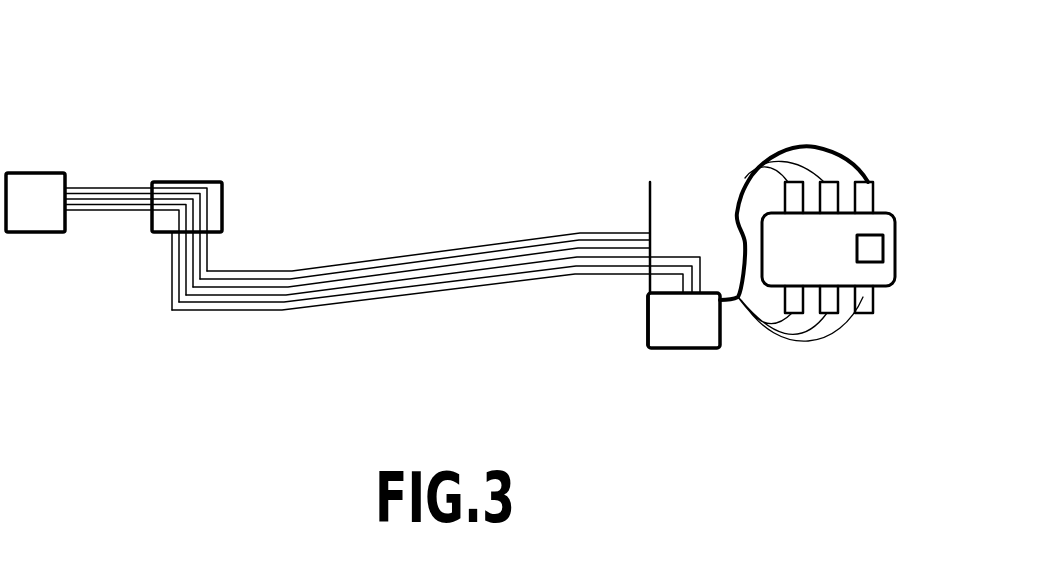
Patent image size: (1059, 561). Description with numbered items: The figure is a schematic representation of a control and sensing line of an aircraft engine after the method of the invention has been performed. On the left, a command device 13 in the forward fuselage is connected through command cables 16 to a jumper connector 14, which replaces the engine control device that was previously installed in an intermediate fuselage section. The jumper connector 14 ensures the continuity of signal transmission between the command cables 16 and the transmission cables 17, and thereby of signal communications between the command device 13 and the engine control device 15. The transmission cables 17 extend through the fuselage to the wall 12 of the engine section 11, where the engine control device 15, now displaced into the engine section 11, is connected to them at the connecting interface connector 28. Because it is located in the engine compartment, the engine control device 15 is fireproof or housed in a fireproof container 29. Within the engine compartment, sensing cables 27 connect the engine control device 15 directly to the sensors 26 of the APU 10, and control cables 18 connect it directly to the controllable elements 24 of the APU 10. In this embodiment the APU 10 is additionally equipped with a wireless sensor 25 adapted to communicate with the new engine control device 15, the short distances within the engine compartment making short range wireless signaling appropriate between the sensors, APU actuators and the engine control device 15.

The APU 10 is at (815, 257).
The engine section 11 is at (802, 118).
The wall 12 is at (645, 187).
The command device 13 is at (24, 178).
The jumper connector 14 is at (207, 185).
The engine control device 15 is at (677, 337).
The command cables 16 is at (112, 215).
The transmission cables 17 is at (401, 293).
The control cables 18 is at (735, 302).
The controllable elements 24 is at (875, 318).
The wireless sensor 25 is at (867, 250).
The sensors 26 is at (864, 195).
The sensing cables 27 is at (735, 215).
The connecting interface connector 28 is at (649, 262).
The fireproof container 29 is at (648, 333).